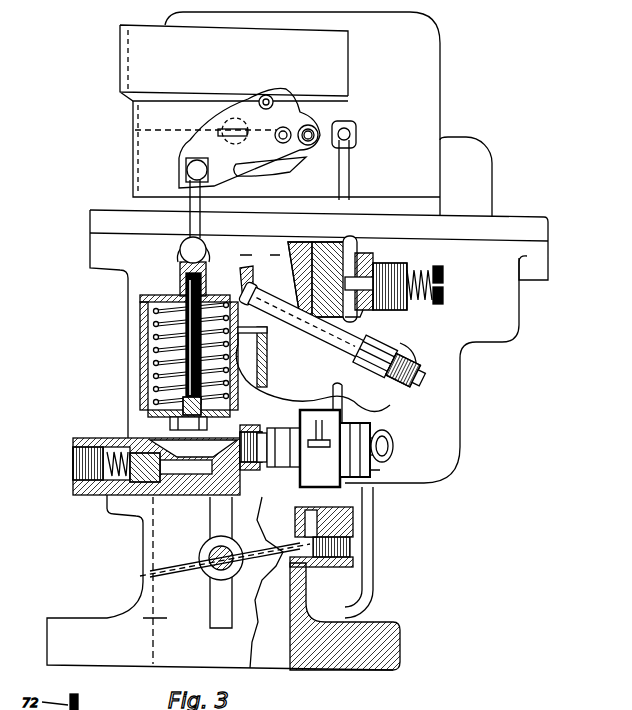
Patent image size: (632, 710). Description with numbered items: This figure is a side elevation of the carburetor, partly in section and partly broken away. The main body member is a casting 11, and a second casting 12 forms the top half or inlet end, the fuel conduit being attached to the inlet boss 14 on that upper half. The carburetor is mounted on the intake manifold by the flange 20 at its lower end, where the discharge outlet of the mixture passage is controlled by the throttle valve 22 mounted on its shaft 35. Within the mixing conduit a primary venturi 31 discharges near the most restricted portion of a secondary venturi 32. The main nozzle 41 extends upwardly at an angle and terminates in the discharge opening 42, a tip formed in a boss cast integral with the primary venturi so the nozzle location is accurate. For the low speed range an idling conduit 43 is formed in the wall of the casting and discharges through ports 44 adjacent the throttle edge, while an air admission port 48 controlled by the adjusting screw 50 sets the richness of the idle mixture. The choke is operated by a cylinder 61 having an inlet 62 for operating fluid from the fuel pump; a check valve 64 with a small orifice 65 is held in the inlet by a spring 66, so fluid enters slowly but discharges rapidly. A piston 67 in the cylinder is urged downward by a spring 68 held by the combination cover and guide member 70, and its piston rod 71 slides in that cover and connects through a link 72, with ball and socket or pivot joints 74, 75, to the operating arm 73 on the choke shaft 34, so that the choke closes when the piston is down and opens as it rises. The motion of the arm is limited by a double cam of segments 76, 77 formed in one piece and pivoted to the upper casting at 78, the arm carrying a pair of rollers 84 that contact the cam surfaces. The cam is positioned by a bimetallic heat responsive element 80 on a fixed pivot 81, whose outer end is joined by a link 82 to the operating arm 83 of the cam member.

The casting 11 is at (127, 338).
The second casting 12 is at (106, 212).
The inlet boss 14 is at (484, 191).
The flange 20 is at (403, 623).
The throttle valve 22 is at (183, 563).
The primary venturi 31 is at (260, 257).
The secondary venturi 32 is at (265, 352).
The rotatable shaft 34 is at (235, 120).
The shaft 35 is at (213, 578).
The main nozzle 41 is at (262, 297).
The discharge opening 42 is at (240, 276).
The idling conduit 43 is at (363, 312).
The discharge ports 44 is at (290, 558).
The air admission port 48 is at (363, 282).
The adjusting screw 50 is at (445, 280).
The cylinder 61 is at (143, 372).
The inlet 62 is at (78, 440).
The check valve 64 is at (145, 488).
The small orifice 65 is at (165, 478).
The spring 66 is at (97, 495).
The piston 67 is at (140, 405).
The spring 68 is at (146, 318).
The combination cover and guide member 70 is at (142, 294).
The piston rod 71 is at (186, 283).
The link 72 is at (191, 218).
The operating arm 73 is at (208, 143).
The ball and socket or pivot joint 74 is at (180, 252).
The ball and socket or pivot joint 75 is at (186, 168).
The cam segment 76 is at (278, 167).
The cam segment 77 is at (292, 102).
The pivot 78 is at (320, 128).
The heat responsive element 80 is at (295, 460).
The fixed pivot 81 is at (390, 447).
The link 82 is at (349, 185).
The operating arm 83 is at (357, 137).
The rollers 84 is at (282, 127).